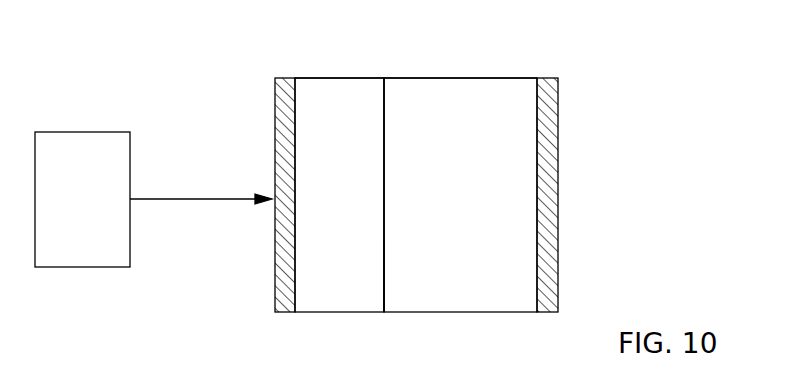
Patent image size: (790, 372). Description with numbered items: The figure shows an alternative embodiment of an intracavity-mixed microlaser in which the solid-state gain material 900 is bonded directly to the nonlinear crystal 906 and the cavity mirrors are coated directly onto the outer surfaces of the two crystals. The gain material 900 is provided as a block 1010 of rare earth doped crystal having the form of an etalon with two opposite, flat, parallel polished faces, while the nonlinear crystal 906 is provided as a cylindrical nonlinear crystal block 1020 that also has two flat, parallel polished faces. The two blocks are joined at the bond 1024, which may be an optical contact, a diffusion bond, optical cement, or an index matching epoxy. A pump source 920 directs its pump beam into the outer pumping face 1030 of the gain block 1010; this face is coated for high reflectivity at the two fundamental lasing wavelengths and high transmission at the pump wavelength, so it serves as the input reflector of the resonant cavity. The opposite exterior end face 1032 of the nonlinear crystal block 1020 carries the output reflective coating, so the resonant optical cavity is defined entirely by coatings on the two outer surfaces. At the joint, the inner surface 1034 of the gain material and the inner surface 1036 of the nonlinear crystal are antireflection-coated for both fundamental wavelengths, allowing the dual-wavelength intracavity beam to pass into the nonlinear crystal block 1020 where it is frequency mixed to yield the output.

The pump source 920 is at (97, 132).
The solid-state gain material 900 is at (360, 279).
The nonlinear crystal 906 is at (482, 279).
The gain material block 1010 is at (322, 78).
The nonlinear crystal block 1020 is at (512, 78).
The bond 1024 is at (393, 65).
The pumping face 1030 is at (274, 121).
The exterior end face 1032 is at (558, 130).
The inner surface of the gain material 1034 is at (387, 265).
The inner surface of the nonlinear crystal 1036 is at (383, 278).